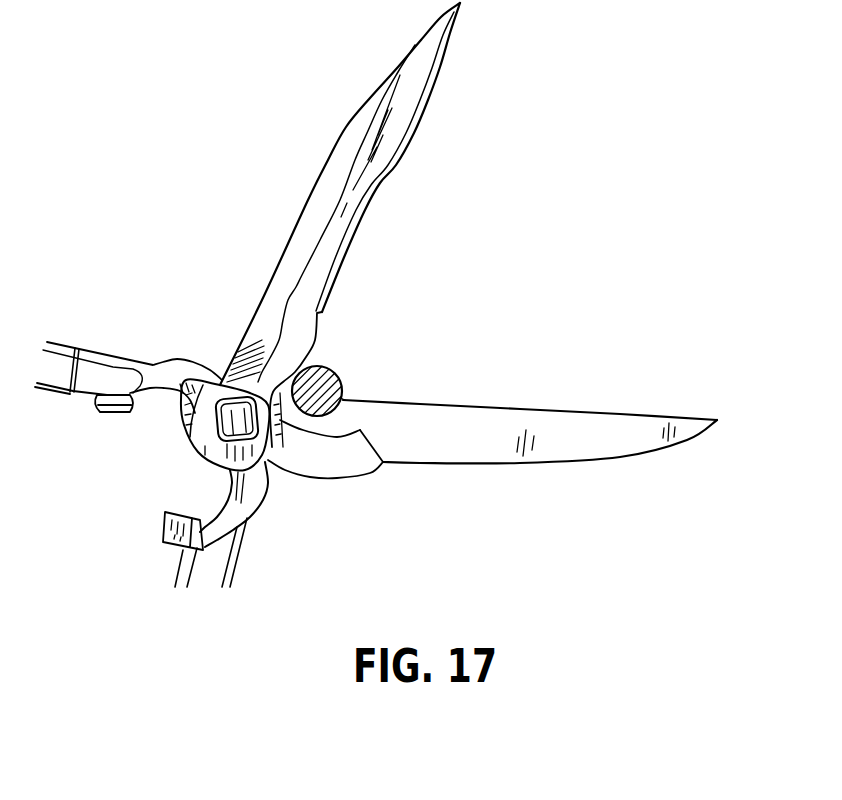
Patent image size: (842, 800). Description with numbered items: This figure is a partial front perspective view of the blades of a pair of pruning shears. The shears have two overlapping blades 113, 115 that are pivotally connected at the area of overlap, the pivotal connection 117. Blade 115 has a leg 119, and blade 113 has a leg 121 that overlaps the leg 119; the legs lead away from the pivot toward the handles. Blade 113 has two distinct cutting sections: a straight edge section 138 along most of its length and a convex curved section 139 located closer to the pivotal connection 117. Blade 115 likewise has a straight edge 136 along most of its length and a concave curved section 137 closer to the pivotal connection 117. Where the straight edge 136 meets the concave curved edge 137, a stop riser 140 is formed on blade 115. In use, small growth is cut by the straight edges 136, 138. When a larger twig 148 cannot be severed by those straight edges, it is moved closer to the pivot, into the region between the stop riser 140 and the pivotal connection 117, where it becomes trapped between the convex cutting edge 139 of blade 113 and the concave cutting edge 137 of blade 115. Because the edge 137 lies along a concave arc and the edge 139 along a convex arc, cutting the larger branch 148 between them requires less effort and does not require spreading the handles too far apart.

The blade 113 is at (346, 127).
The blade 115 is at (620, 457).
The pivotal connection 117 is at (202, 438).
The leg 119 is at (177, 359).
The leg 121 is at (265, 501).
The straight edge 136 is at (640, 413).
The concave curved section 137 is at (241, 371).
The straight edge section 138 is at (408, 137).
The convex curved section 139 is at (322, 343).
The stop riser 140 is at (345, 396).
The twig 148 is at (340, 378).